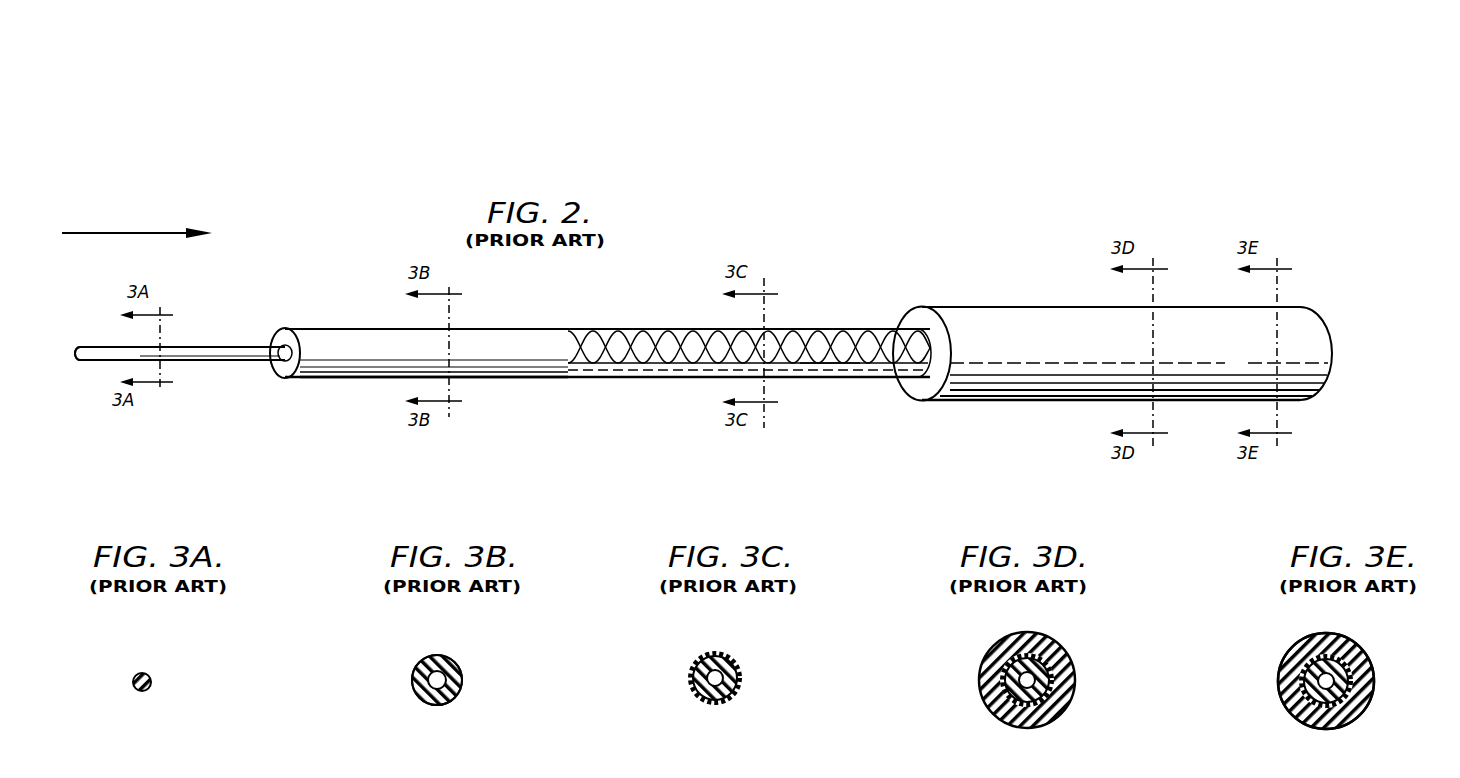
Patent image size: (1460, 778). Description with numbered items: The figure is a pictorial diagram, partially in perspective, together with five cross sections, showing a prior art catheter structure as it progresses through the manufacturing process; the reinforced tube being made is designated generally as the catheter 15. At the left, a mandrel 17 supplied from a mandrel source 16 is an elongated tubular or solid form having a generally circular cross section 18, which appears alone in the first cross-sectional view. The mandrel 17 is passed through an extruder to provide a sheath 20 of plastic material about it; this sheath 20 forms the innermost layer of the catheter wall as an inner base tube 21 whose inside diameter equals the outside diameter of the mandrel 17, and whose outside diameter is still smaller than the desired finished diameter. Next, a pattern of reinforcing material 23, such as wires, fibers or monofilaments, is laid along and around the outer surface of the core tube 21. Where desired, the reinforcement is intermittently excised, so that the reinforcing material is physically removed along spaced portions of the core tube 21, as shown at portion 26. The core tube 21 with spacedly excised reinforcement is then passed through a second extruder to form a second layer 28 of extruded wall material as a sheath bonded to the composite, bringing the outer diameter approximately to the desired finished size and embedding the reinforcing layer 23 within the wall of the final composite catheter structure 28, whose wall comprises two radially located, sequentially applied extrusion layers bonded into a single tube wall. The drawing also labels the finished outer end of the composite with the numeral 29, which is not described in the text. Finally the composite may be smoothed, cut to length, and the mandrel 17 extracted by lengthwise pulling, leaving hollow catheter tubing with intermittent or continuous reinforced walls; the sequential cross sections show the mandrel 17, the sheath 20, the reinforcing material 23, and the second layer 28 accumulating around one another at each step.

In FIG. 2, the catheter 15 is at (1317, 258).
In FIG. 2, the mandrel source 16 is at (48, 372).
In FIG. 2, the mandrel 17 is at (210, 360).
In FIG. 3C, the mandrel 17 is at (706, 700).
In FIG. 3D, the mandrel 17 is at (1004, 698).
In FIG. 3A, the circular cross section 18 is at (150, 675).
In FIG. 2, the sheath 20 is at (356, 320).
In FIG. 3B, the sheath 20 is at (417, 664).
In FIG. 3C, the sheath 20 is at (697, 664).
In FIG. 3D, the sheath 20 is at (1000, 652).
In FIG. 3E, the sheath 20 is at (1365, 667).
In FIG. 2, the inner base tube 21 is at (513, 378).
In FIG. 3B, the inner base tube 21 is at (460, 656).
In FIG. 2, the reinforcing material 23 is at (647, 330).
In FIG. 3C, the reinforcing material 23 is at (731, 660).
In FIG. 3D, the reinforcing material 23 is at (988, 686).
In FIG. 3E, the reinforcing material 23 is at (1362, 695).
In FIG. 2, the portion of excised reinforcement 26 is at (826, 352).
In FIG. 2, the second layer 28 is at (1026, 298).
In FIG. 3D, the second layer 28 is at (1040, 642).
In FIG. 3E, the second layer 28 is at (1312, 640).
In FIG. 2, the rounded distal tip 29 is at (1339, 316).
In FIG. 3E, the rounded distal tip 29 is at (1372, 635).